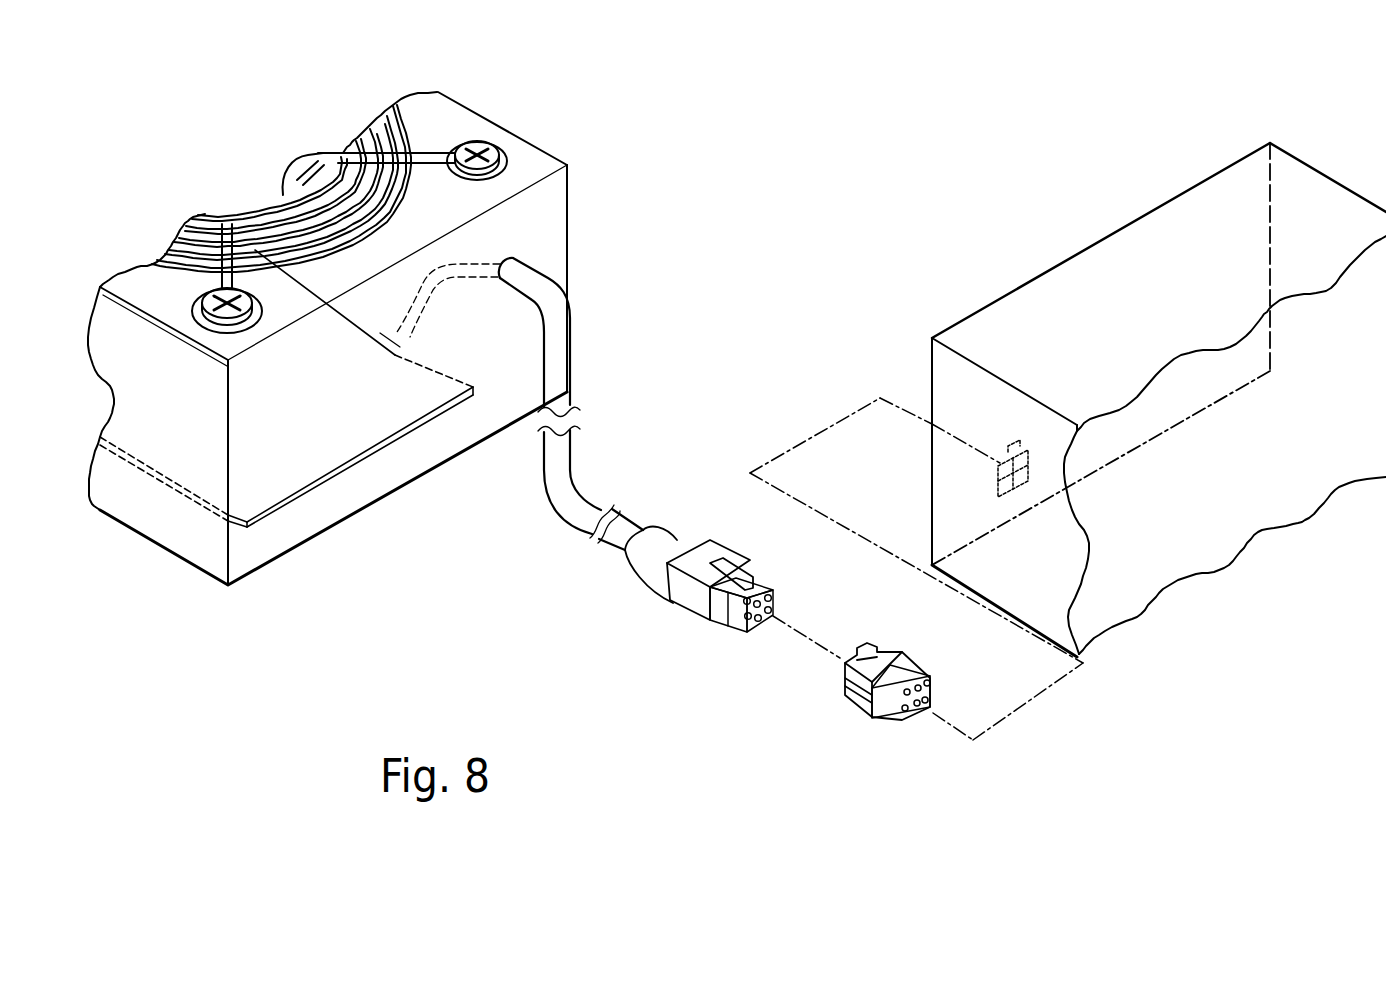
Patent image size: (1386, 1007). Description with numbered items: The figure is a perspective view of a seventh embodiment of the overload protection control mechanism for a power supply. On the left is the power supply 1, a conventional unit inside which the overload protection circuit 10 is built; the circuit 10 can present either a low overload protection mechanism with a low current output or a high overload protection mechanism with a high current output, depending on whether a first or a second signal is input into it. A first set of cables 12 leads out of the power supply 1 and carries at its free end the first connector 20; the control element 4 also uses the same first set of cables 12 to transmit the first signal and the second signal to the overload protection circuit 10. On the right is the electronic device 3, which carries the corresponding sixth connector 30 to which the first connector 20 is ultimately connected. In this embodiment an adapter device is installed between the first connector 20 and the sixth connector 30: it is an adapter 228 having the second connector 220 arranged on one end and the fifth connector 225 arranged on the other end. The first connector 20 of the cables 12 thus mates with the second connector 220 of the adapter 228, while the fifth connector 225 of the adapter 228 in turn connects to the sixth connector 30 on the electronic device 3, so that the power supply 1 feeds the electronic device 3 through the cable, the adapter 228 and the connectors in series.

The power supply 1 is at (542, 147).
The overload protection circuit 10 is at (347, 470).
The first set of cables 12 is at (562, 355).
The control element 4 is at (703, 633).
The first connector 20 is at (757, 638).
The second connector 220 is at (872, 688).
The adapter 228 is at (864, 718).
The fifth connector 225 is at (917, 712).
The electronic device 3 is at (1013, 286).
The sixth connector 30 is at (997, 478).